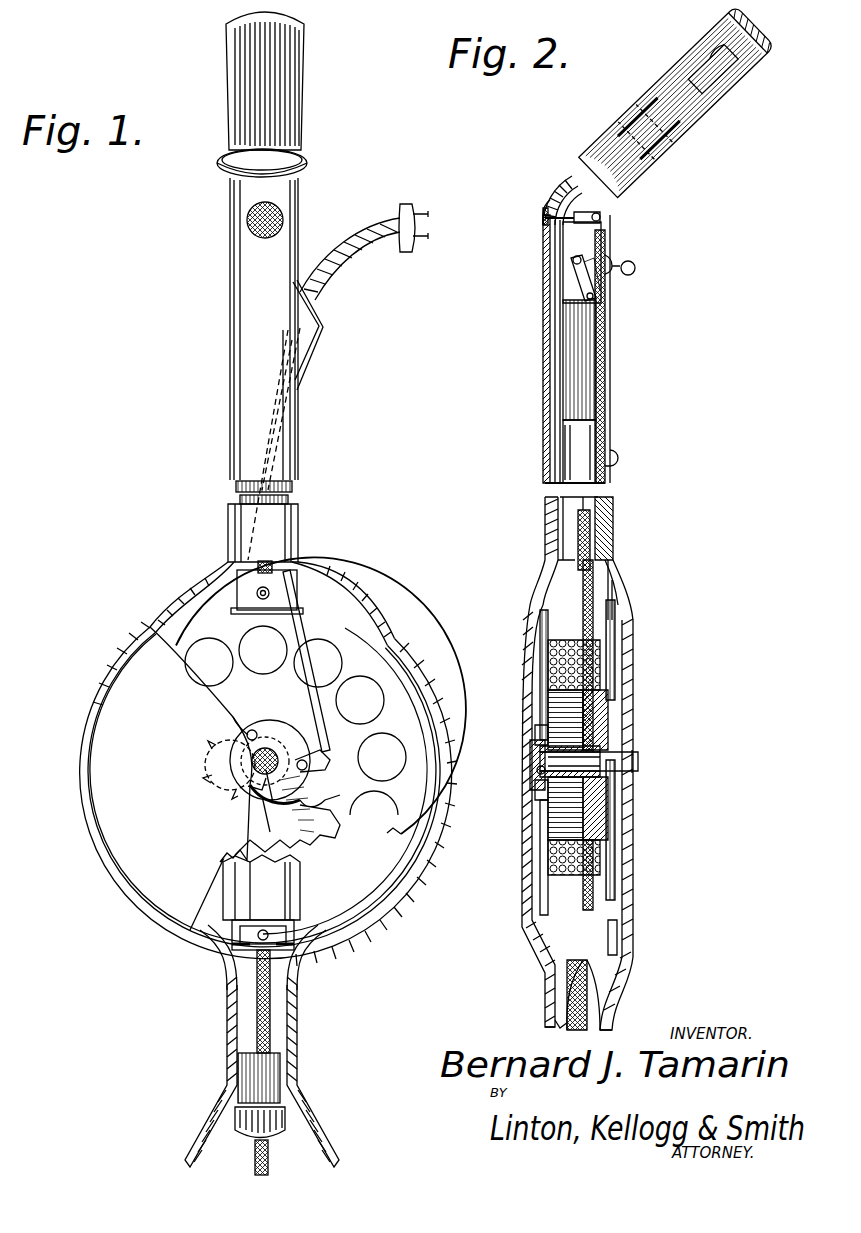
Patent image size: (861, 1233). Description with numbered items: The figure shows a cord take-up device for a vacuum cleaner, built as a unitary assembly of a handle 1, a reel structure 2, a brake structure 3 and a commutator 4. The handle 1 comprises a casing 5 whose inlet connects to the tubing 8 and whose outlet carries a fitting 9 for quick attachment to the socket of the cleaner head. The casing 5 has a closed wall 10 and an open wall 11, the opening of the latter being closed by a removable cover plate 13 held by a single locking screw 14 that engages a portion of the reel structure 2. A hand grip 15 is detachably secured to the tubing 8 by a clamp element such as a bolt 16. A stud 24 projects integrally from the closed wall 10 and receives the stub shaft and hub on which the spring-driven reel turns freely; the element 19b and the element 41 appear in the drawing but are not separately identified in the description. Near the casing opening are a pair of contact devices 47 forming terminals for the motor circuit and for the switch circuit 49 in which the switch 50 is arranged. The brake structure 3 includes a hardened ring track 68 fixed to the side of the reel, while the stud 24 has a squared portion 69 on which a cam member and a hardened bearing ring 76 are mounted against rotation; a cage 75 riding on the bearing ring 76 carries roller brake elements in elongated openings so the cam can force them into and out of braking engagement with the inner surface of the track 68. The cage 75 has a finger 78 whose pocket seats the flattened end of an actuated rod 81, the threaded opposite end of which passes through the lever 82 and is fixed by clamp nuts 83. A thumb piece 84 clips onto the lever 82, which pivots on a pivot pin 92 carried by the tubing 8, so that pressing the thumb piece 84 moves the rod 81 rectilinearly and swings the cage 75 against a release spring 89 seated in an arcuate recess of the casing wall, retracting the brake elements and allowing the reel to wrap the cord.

In FIG. 1, the handle 1 is at (292, 546).
In FIG. 2, the handle 1 is at (612, 441).
In FIG. 1, the reel structure 2 is at (368, 668).
In FIG. 2, the reel structure 2 is at (548, 695).
In FIG. 1, the brake structure 3 is at (268, 727).
In FIG. 2, the brake structure 3 is at (532, 737).
In FIG. 1, the commutator 4 is at (300, 906).
In FIG. 2, the commutator 4 is at (632, 668).
In FIG. 1, the casing 5 is at (426, 855).
In FIG. 2, the casing 5 is at (538, 582).
In FIG. 1, the tubing 8 is at (228, 408).
In FIG. 2, the tubing 8 is at (543, 405).
In FIG. 1, the fitting 9 is at (297, 990).
In FIG. 1, the closed wall 10 is at (202, 850).
In FIG. 2, the closed wall 10 is at (526, 888).
In FIG. 2, the open wall 11 is at (624, 955).
In FIG. 2, the cover plate 13 is at (632, 612).
In FIG. 2, the locking screw 14 is at (638, 762).
In FIG. 1, the hand grip 15 is at (300, 136).
In FIG. 2, the hand grip 15 is at (688, 144).
In FIG. 2, the bolt 16 is at (657, 113).
In FIG. 2, the lower armature winding 19b is at (556, 826).
In FIG. 2, the stud 24 is at (540, 772).
In FIG. 1, the electric cable 41 is at (344, 263).
In FIG. 2, the electric cable 41 is at (583, 526).
In FIG. 1, the contact devices 47 is at (305, 586).
In FIG. 2, the contact devices 47 is at (618, 586).
In FIG. 2, the switch circuit 49 is at (600, 353).
In FIG. 2, the switch 50 is at (594, 243).
In FIG. 1, the track 68 is at (236, 717).
In FIG. 1, the squared portion 69 is at (255, 796).
In FIG. 1, the cage 75 is at (302, 812).
In FIG. 1, the bearing ring 76 is at (275, 812).
In FIG. 1, the finger 78 is at (295, 815).
In FIG. 1, the actuated rod 81 is at (300, 632).
In FIG. 2, the actuated rod 81 is at (548, 568).
In FIG. 2, the lever 82 is at (582, 187).
In FIG. 2, the clamp nuts 83 is at (550, 202).
In FIG. 1, the thumb piece 84 is at (252, 231).
In FIG. 2, the thumb piece 84 is at (548, 217).
In FIG. 1, the release spring 89 is at (212, 762).
In FIG. 2, the pivot pin 92 is at (604, 219).